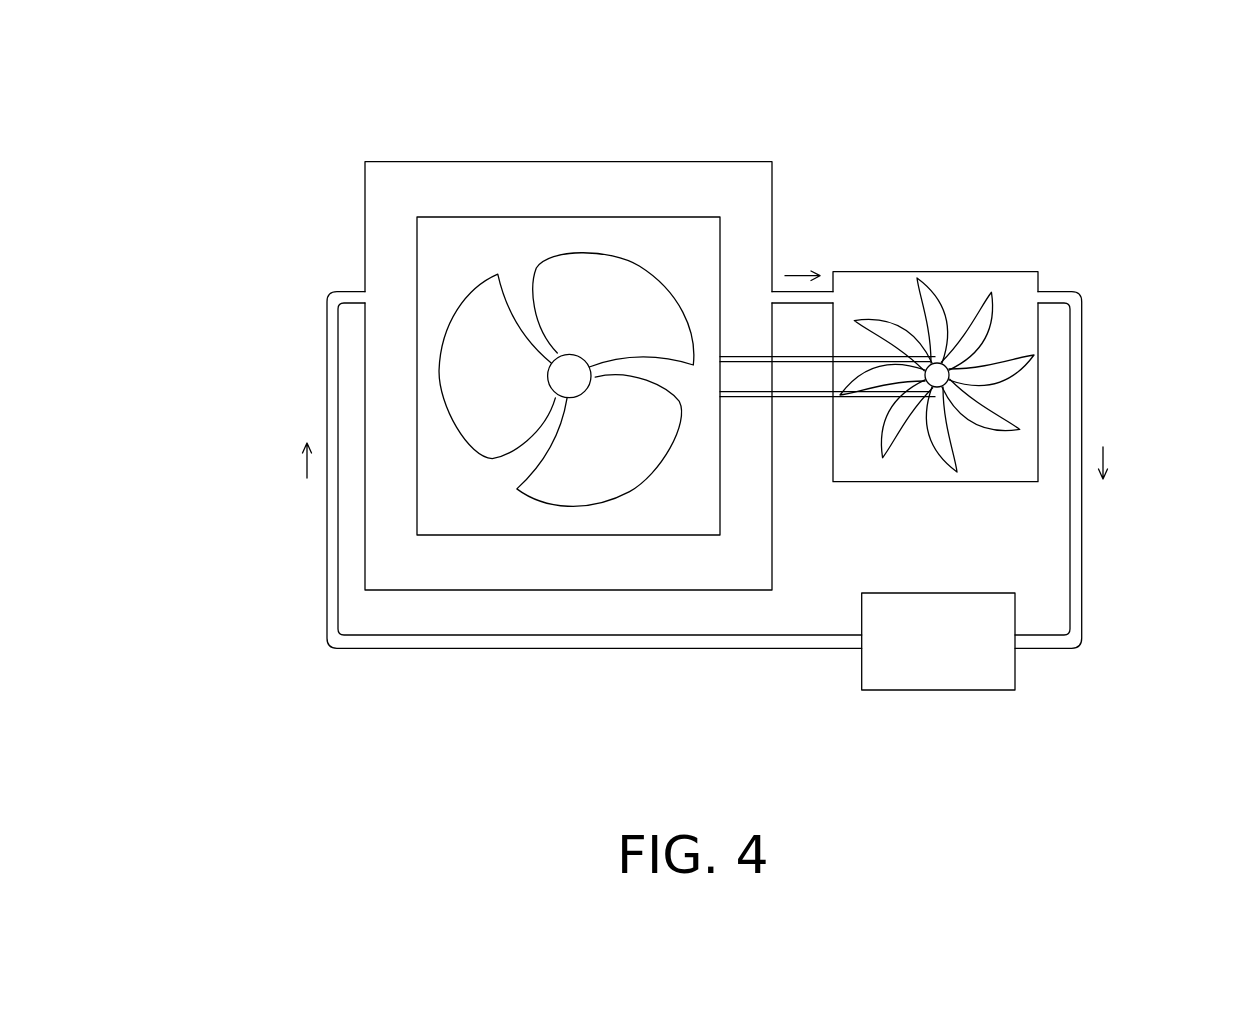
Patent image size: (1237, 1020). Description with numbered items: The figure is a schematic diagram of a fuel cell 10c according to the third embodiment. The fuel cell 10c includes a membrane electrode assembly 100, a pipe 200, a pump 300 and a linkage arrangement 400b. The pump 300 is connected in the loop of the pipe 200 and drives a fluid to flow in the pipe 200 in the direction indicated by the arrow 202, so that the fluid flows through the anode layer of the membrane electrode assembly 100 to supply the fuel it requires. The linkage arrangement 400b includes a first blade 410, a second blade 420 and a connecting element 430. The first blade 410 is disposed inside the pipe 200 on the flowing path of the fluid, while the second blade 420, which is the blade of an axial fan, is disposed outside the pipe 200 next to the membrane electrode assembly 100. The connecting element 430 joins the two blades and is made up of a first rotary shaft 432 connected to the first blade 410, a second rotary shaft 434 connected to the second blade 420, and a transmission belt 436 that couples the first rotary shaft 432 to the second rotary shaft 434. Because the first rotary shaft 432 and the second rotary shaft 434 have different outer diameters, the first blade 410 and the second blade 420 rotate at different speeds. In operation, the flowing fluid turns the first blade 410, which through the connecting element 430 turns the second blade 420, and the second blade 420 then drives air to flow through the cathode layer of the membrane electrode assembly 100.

The fuel cell 10c is at (911, 804).
The membrane electrode assembly 100 is at (642, 182).
The pipe 200 is at (327, 517).
The arrow 202 is at (299, 457).
The pump 300 is at (960, 677).
The linkage arrangement 400b is at (1005, 77).
The first blade 410 is at (987, 320).
The second blade 420 is at (675, 217).
The connecting element 430 is at (968, 130).
The first rotary shaft 432 is at (937, 363).
The second rotary shaft 434 is at (593, 362).
The transmission belt 436 is at (860, 357).